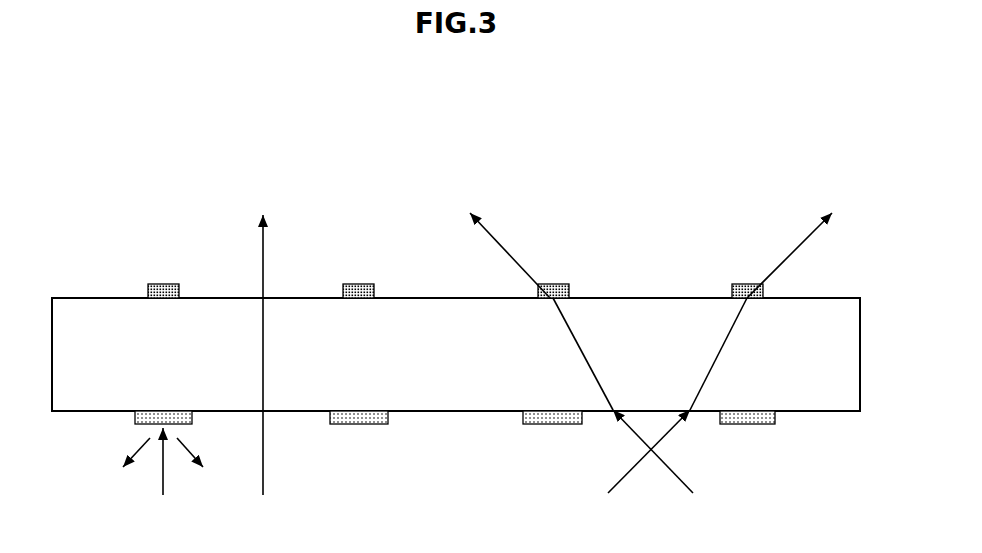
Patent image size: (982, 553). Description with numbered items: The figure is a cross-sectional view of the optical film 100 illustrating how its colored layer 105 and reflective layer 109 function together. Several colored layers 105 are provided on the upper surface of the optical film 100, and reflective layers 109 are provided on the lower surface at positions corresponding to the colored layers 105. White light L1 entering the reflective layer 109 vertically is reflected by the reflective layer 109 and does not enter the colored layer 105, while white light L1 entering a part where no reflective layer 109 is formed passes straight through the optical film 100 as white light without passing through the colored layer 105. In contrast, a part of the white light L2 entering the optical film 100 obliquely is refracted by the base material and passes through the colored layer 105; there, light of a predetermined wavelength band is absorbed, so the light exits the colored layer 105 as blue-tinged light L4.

The optical film 100 is at (436, 107).
The colored layer 105 is at (163, 284).
The reflective layer 109 is at (140, 426).
The white light L1 is at (163, 485).
The white light L2 is at (649, 467).
The blue-tinged light L4 is at (497, 237).